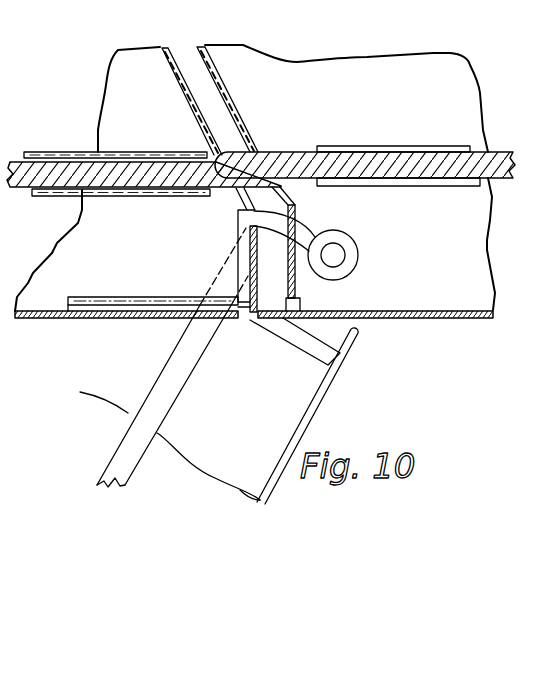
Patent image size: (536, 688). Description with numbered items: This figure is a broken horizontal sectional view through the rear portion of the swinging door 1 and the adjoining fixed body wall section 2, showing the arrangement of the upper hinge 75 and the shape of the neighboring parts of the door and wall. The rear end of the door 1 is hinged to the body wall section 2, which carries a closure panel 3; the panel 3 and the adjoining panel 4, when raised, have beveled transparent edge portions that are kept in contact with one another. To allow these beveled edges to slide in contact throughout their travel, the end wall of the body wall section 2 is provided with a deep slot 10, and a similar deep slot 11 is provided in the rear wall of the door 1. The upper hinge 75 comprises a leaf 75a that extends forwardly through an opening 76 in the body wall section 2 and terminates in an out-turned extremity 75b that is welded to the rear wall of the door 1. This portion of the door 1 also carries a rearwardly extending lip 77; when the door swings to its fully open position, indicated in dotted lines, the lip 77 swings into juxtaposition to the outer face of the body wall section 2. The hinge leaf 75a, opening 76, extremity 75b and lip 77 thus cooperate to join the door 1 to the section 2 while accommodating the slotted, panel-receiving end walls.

The swinging door 1 is at (42, 314).
The body wall section 2 is at (448, 319).
The closure panel 3 is at (153, 176).
The panel 4 is at (418, 163).
The slot 10 is at (255, 140).
The slot 11 is at (210, 135).
The upper hinge 75 is at (346, 260).
The leaf 75a is at (307, 235).
The out-turned extremity 75b is at (240, 238).
The opening 76 is at (292, 296).
The lip 77 is at (268, 306).